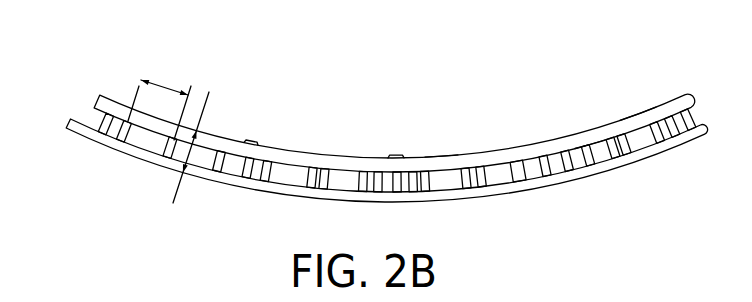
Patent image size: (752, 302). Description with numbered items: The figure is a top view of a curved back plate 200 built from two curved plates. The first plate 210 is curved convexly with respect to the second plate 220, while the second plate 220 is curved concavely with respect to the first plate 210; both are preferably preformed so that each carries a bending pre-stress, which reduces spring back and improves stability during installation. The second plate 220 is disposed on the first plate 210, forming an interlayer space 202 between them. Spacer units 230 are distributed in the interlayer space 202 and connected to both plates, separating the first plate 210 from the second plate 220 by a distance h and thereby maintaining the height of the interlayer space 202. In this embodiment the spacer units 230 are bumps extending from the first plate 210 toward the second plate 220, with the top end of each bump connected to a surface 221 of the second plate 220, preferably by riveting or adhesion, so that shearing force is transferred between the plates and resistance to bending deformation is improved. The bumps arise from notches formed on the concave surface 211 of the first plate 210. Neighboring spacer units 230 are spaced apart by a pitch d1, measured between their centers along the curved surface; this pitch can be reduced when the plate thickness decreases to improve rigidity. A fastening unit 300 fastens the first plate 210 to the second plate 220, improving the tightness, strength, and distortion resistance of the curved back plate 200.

The curved back plate 200 is at (97, 28).
The first plate 210 is at (97, 100).
The second plate 220 is at (68, 124).
The spacer units 230 is at (320, 172).
The fastening unit 300 is at (539, 142).
The surface of the second plate 221 is at (590, 136).
The concave surface of the first plate 211 is at (637, 111).
The interlayer space 202 is at (442, 167).
The pitch d1 is at (159, 101).
The distance h is at (193, 158).